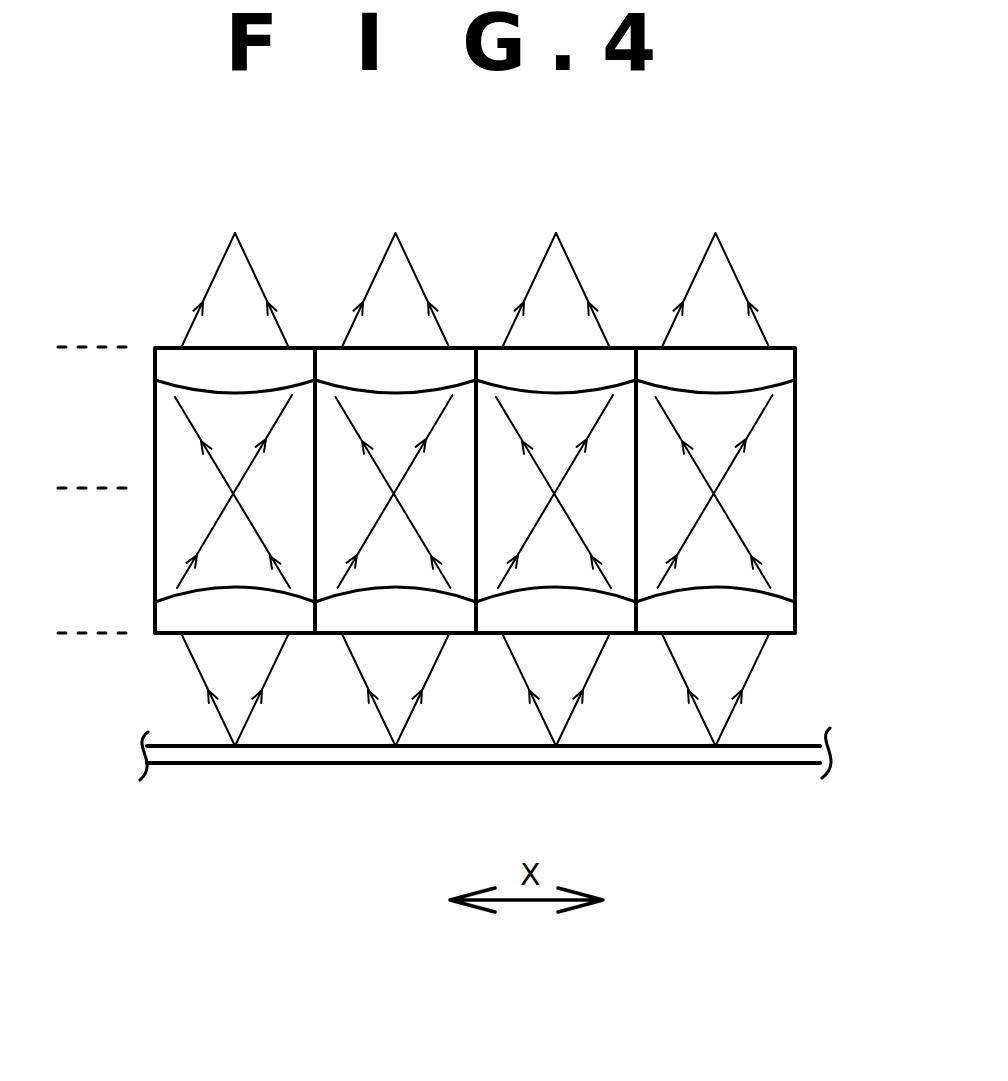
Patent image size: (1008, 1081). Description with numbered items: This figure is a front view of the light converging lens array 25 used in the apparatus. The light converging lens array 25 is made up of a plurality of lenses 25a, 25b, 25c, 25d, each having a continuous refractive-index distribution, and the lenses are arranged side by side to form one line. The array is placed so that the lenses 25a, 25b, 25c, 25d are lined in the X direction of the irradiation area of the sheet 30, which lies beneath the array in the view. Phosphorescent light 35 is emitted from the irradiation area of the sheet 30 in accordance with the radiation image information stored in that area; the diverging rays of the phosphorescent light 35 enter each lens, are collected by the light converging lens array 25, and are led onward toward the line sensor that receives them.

The light converging lens array 25 is at (119, 376).
The lens 25a is at (772, 367).
The lens 25b is at (610, 367).
The lens 25c is at (457, 365).
The lens 25d is at (302, 365).
The sheet 30 is at (753, 765).
The phosphorescent light 35 is at (755, 667).